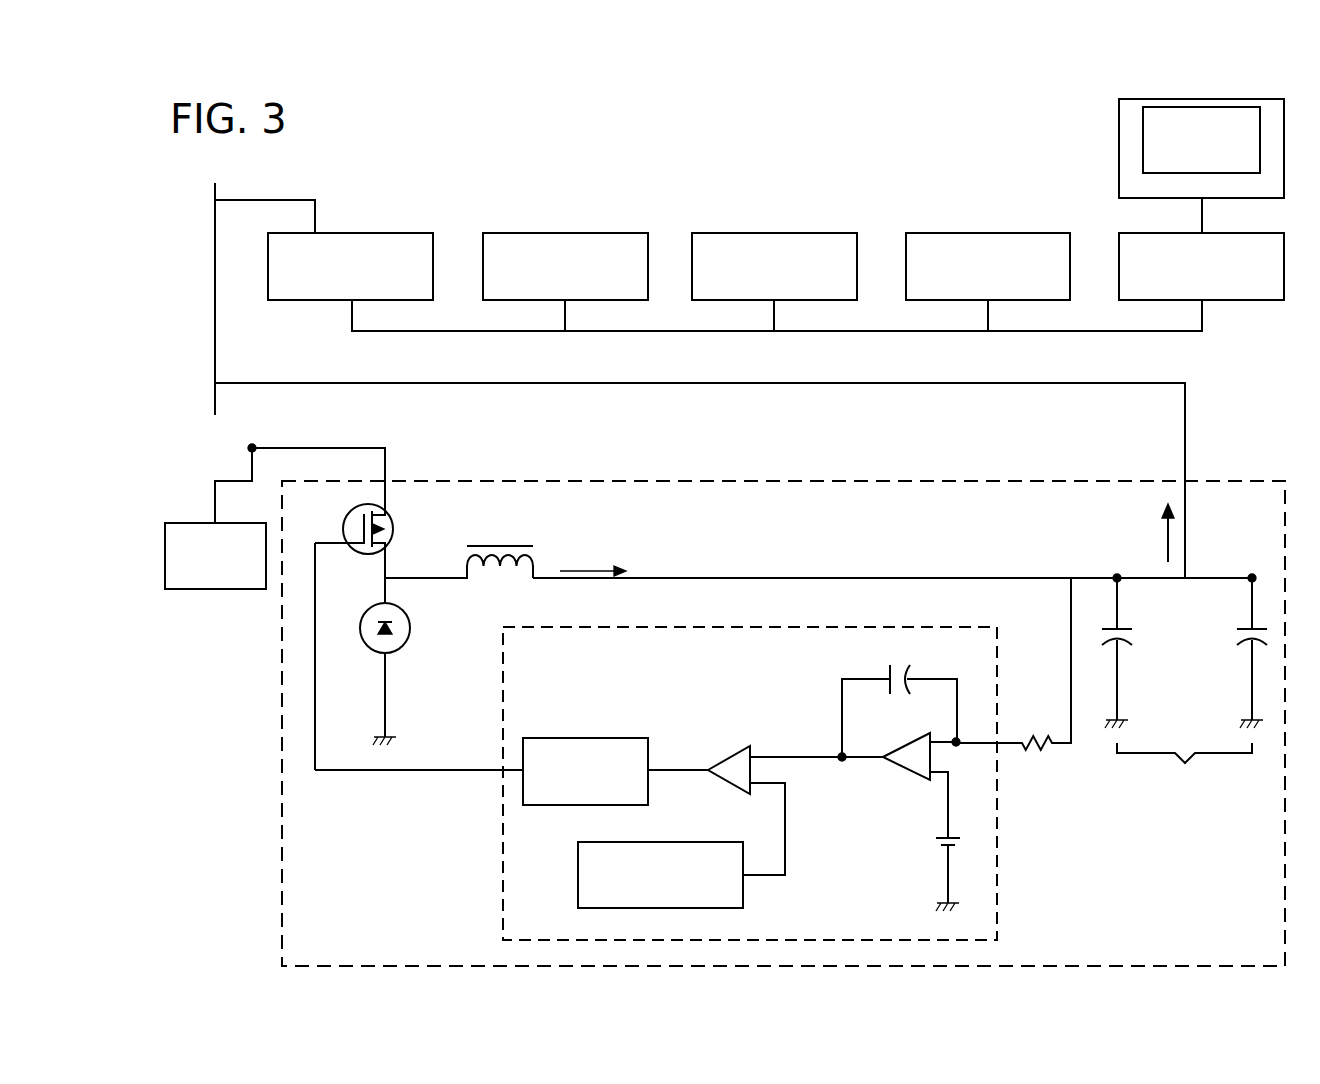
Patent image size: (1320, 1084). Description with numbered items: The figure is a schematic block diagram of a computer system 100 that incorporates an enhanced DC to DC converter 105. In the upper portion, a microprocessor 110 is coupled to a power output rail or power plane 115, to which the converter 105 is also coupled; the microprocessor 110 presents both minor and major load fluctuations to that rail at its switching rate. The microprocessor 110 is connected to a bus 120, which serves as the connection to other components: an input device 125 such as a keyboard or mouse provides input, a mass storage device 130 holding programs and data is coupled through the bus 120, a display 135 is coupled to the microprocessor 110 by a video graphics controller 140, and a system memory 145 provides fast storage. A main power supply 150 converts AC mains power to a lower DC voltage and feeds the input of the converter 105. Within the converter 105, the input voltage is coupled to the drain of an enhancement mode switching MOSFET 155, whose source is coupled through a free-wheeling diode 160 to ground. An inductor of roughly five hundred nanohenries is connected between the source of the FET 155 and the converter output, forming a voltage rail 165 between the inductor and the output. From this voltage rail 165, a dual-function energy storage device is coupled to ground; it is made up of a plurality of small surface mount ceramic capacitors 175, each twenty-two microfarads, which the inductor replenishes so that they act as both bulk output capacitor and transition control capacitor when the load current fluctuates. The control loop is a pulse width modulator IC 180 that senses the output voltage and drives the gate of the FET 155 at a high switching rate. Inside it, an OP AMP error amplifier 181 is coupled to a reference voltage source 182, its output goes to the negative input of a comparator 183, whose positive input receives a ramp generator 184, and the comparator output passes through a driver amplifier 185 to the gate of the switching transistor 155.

The computer system 100 is at (753, 168).
The DC to DC converter 105 is at (725, 693).
The microprocessor 110 is at (390, 232).
The power plane 115 is at (213, 401).
The bus 120 is at (502, 332).
The input device 125 is at (752, 232).
The mass storage device 130 is at (948, 232).
The display 135 is at (1119, 145).
The video graphics controller 140 is at (1140, 232).
The system memory 145 is at (530, 232).
The main power supply 150 is at (196, 522).
The switching MOSFET 155 is at (345, 528).
The free-wheeling diode 160 is at (363, 612).
The voltage rail 165 is at (850, 577).
The capacitors 175 is at (1113, 627).
The pulse width modulator IC 180 is at (553, 624).
The error amplifier 181 is at (905, 772).
The voltage source 182 is at (945, 832).
The comparator 183 is at (727, 758).
The ramp generator 184 is at (745, 889).
The driver amplifier 185 is at (601, 738).